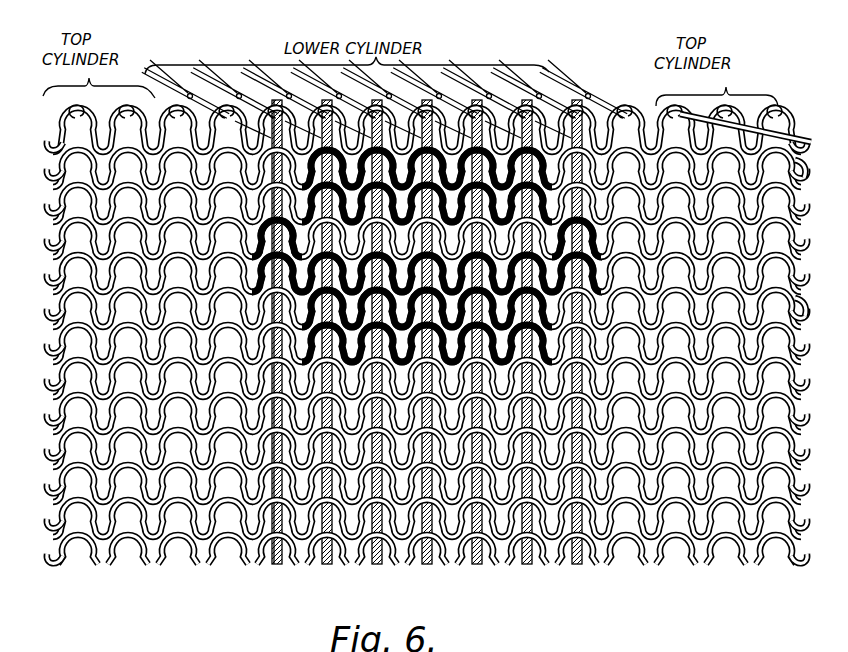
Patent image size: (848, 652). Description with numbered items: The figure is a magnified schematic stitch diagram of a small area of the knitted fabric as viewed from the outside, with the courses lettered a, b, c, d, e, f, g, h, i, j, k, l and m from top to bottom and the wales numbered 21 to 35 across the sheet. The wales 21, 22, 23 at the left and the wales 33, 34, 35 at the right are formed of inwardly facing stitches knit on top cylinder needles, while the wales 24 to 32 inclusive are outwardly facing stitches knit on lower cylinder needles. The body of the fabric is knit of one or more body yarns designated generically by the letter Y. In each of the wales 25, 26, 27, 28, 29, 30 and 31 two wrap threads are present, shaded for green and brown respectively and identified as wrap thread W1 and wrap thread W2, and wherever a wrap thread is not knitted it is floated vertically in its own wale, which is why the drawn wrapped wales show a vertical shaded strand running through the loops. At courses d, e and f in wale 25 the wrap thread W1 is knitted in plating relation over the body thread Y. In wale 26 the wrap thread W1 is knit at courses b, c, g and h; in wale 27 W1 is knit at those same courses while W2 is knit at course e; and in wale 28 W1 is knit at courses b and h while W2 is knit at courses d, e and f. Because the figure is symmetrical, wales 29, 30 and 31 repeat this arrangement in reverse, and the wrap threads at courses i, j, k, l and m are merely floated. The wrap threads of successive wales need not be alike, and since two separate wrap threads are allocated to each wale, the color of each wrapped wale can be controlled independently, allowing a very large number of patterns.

The wale 21 is at (78, 345).
The wale 22 is at (128, 345).
The wale 23 is at (178, 345).
The wale 24 is at (197, 323).
The wale 25 is at (246, 323).
The wale 26 is at (296, 323).
The wale 27 is at (346, 323).
The wale 28 is at (396, 323).
The wale 29 is at (446, 323).
The wale 30 is at (496, 323).
The wale 31 is at (546, 323).
The wale 32 is at (595, 323).
The wale 33 is at (676, 345).
The wale 34 is at (726, 345).
The wale 35 is at (776, 345).
The course a is at (419, 138).
The course b is at (419, 173).
The course c is at (419, 211).
The course d is at (419, 247).
The course e is at (419, 283).
The course f is at (419, 318).
The course g is at (419, 353).
The course h is at (419, 388).
The course i is at (419, 420).
The course j is at (417, 455).
The course k is at (419, 490).
The course l is at (419, 522).
The course m is at (416, 553).
The wrap thread W1 is at (267, 560).
The wrap thread W2 is at (273, 557).
The body yarn Y is at (745, 221).